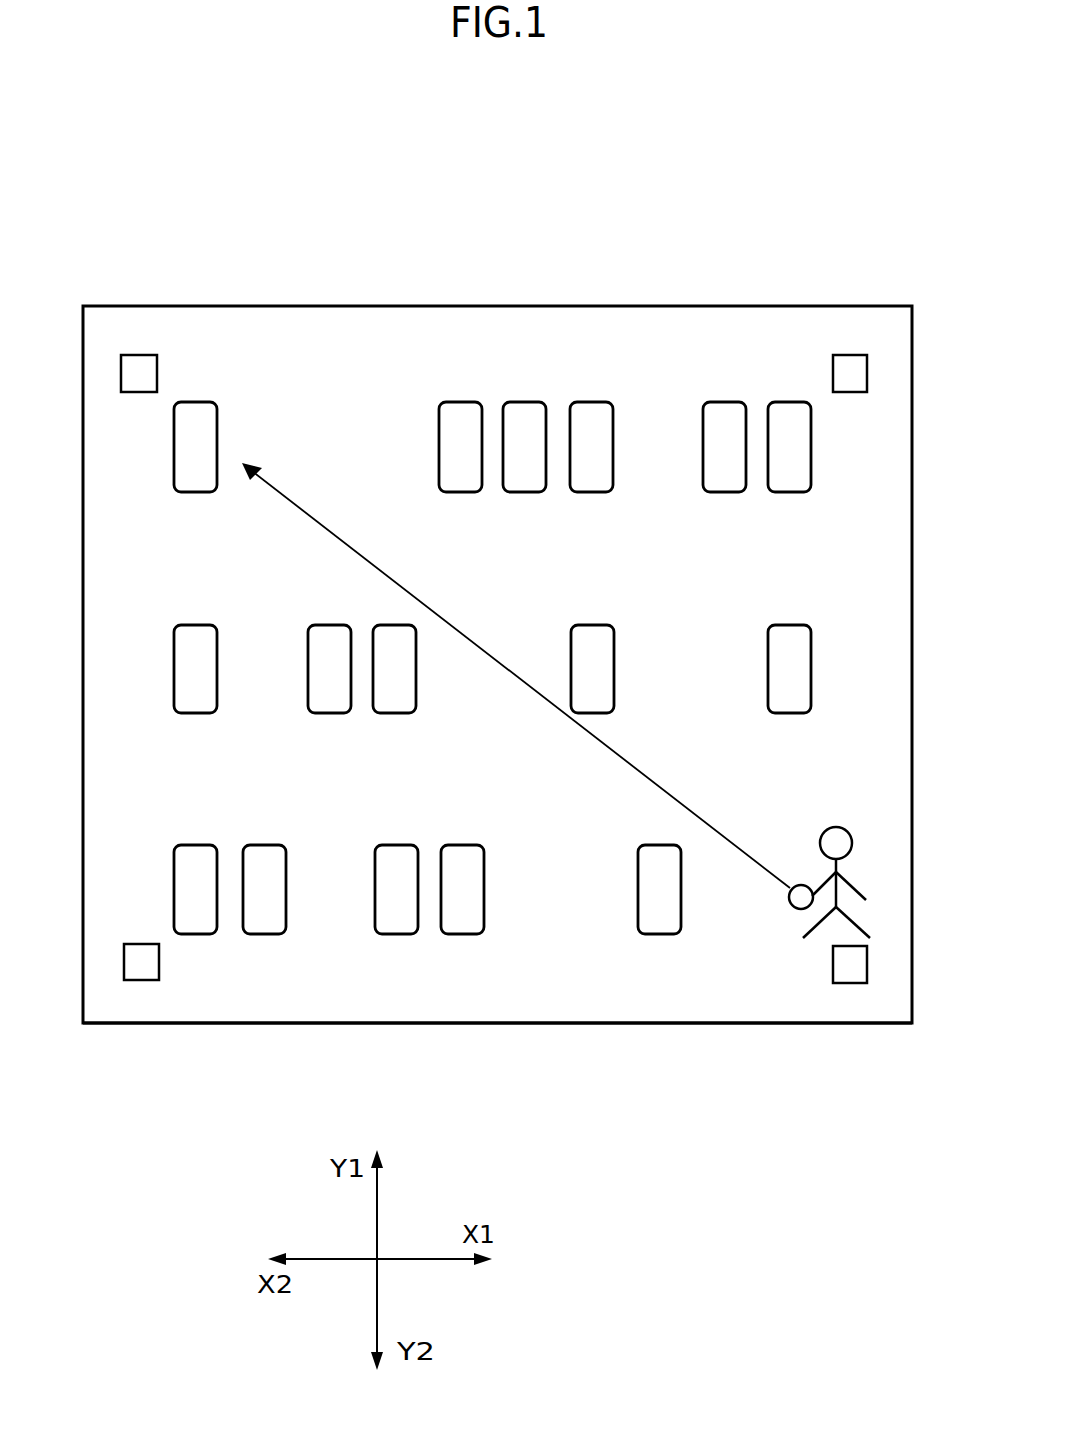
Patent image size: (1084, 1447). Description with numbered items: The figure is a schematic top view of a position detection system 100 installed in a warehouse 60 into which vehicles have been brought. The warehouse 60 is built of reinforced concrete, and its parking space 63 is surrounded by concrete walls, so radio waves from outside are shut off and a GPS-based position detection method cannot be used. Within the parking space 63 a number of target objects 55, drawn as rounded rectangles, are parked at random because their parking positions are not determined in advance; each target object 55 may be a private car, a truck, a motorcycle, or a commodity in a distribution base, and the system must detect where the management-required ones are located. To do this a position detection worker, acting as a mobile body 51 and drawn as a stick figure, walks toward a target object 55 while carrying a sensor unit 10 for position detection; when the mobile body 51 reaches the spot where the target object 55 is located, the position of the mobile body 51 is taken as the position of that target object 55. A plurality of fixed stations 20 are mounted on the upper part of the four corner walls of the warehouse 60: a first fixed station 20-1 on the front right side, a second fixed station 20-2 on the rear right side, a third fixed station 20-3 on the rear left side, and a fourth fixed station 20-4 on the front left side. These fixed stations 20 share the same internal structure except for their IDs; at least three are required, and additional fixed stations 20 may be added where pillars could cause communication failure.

The position detection system 100 is at (773, 254).
The warehouse 60 is at (405, 306).
The parking space 63 is at (554, 965).
The target object 55 is at (593, 410).
The fixed station 20 is at (756, 1151).
The first fixed station 20-1 is at (848, 985).
The second fixed station 20-2 is at (845, 375).
The third fixed station 20-3 is at (143, 365).
The fourth fixed station 20-4 is at (148, 967).
The mobile body 51 is at (855, 825).
The sensor unit 10 is at (800, 910).